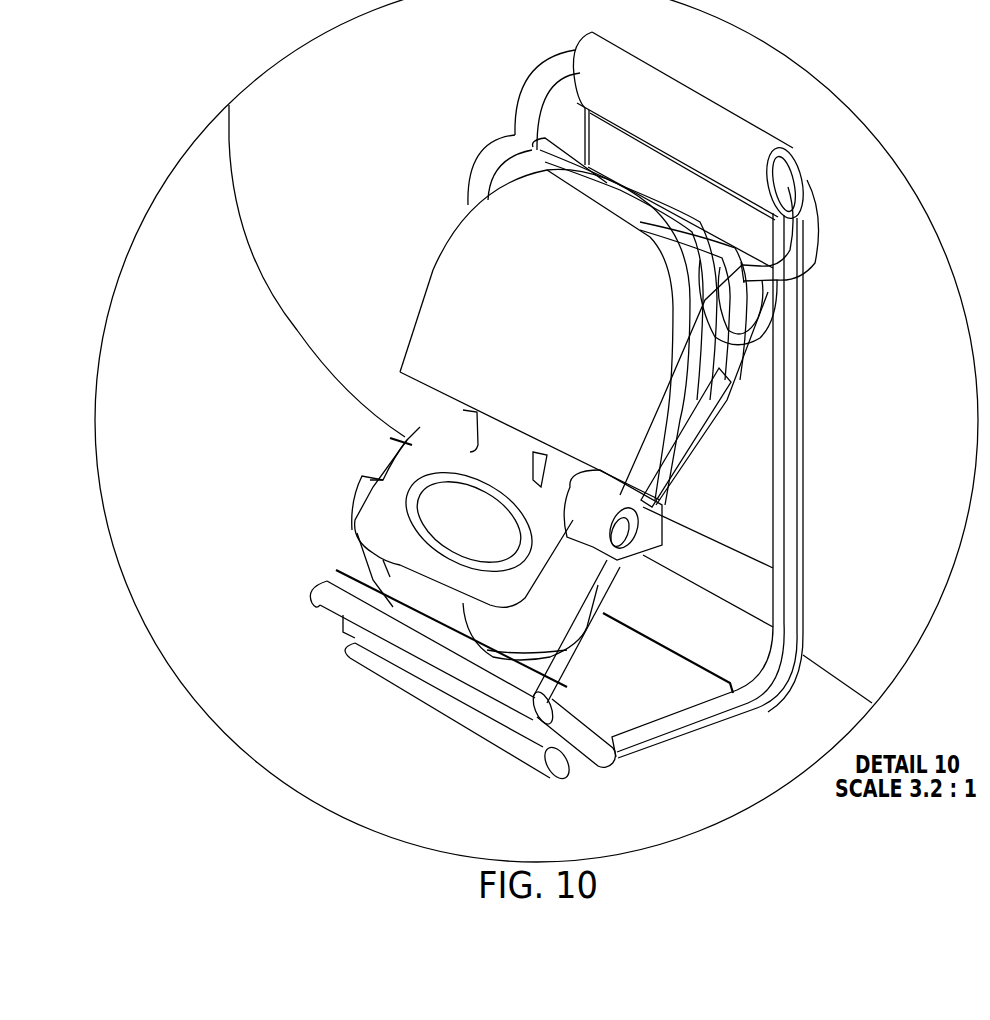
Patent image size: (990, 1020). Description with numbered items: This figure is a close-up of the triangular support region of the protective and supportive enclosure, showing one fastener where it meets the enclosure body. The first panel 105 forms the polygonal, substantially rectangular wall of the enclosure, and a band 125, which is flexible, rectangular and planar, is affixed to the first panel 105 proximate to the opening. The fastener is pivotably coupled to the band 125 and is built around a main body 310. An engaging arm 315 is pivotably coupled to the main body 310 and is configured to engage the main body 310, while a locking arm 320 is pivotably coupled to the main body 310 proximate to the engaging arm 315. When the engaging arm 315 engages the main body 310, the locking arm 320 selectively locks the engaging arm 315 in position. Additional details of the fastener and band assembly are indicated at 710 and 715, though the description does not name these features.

The first panel 105 is at (388, 229).
The band 125 is at (802, 417).
The main body 310 is at (680, 490).
The engaging arm 315 is at (579, 340).
The locking arm 320 is at (357, 487).
The ring 710 is at (502, 135).
The rod 715 is at (313, 587).